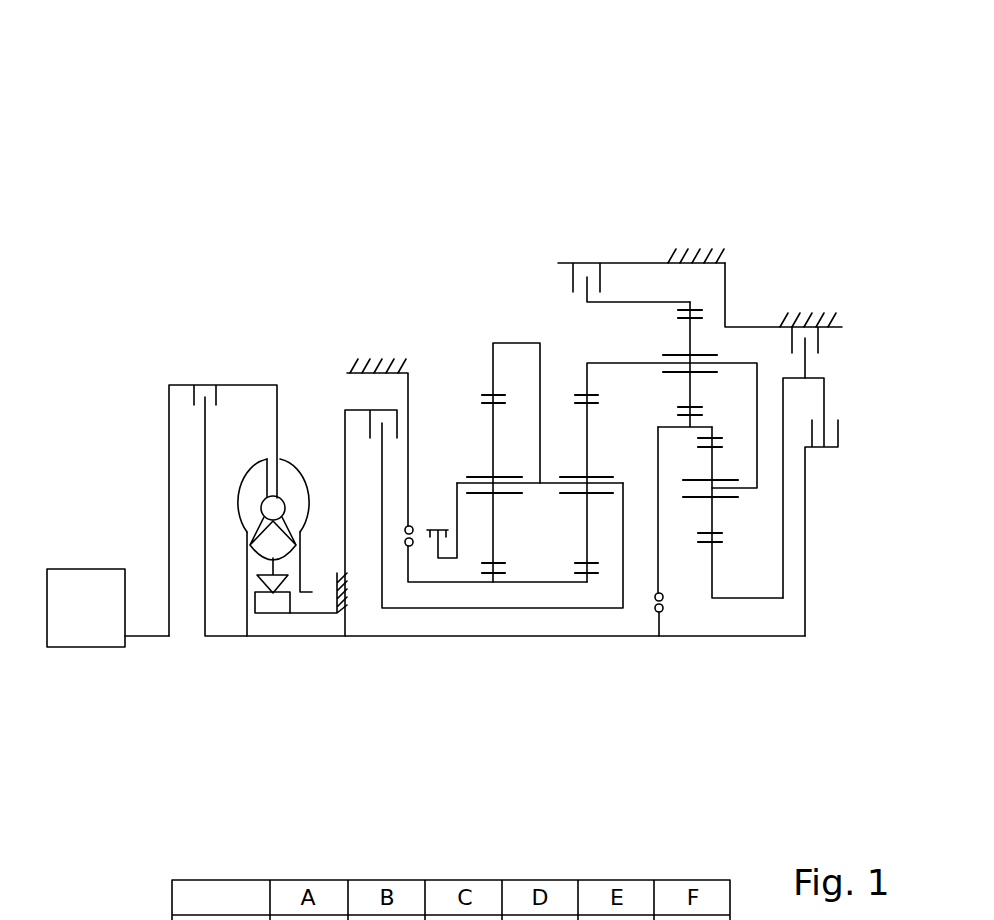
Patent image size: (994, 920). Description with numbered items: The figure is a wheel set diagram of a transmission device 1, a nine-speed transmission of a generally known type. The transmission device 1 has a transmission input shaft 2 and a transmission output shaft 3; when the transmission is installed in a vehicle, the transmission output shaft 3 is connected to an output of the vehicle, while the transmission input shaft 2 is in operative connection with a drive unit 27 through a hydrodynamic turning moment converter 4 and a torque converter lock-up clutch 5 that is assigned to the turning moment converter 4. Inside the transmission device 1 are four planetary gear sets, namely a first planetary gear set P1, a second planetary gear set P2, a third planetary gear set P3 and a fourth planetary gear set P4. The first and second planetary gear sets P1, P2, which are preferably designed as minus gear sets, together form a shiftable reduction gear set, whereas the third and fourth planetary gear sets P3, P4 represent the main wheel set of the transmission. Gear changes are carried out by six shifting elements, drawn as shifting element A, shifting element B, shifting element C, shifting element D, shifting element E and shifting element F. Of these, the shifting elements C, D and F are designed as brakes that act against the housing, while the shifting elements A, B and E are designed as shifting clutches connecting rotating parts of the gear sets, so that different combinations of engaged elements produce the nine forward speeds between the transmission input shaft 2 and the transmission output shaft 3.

The transmission device 1 is at (512, 155).
The transmission input shaft 2 is at (293, 640).
The transmission output shaft 3 is at (433, 535).
The hydrodynamic turning moment converter 4 is at (292, 452).
The torque converter lock-up clutch 5 is at (202, 372).
The drive unit 27 is at (85, 650).
The shifting element A is at (657, 612).
The shifting element B is at (830, 450).
The shifting element C is at (788, 345).
The shifting element D is at (593, 263).
The shifting element E is at (367, 420).
The shifting element F is at (407, 548).
The first planetary gear set P1 is at (702, 552).
The second planetary gear set P2 is at (697, 302).
The third planetary gear set P3 is at (580, 380).
The fourth planetary gear set P4 is at (482, 380).